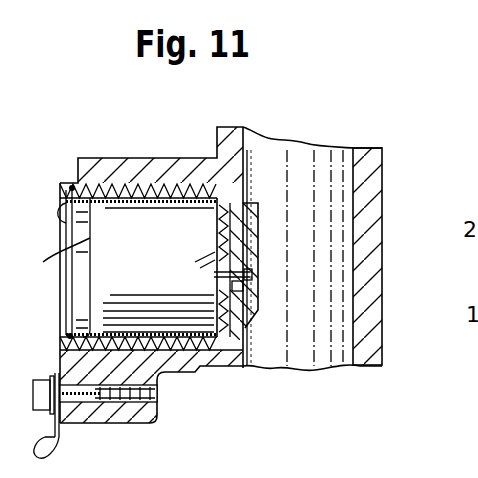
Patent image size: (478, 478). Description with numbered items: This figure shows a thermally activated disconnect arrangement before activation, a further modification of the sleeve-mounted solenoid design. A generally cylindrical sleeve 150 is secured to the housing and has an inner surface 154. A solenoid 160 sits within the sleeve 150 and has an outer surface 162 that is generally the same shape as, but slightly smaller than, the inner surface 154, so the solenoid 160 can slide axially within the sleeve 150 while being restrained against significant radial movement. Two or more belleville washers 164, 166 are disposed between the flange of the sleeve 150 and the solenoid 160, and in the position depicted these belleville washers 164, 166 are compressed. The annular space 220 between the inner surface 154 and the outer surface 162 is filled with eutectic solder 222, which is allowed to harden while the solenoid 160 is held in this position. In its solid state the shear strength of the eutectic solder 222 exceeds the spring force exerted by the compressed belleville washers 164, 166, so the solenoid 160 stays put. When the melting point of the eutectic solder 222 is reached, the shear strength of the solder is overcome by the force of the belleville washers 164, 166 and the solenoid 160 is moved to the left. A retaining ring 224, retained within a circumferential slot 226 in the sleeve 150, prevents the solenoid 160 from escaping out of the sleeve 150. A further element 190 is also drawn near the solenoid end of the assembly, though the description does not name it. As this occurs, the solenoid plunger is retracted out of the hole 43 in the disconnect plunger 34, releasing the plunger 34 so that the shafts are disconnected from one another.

The disconnect plunger 34 is at (382, 231).
The aperture 43 is at (247, 274).
The sleeve 150 is at (90, 184).
The inner surface 154 is at (180, 172).
The solenoid 160 is at (203, 345).
The outer surface 162 is at (166, 277).
The belleville washer 164 is at (238, 214).
The belleville washer 166 is at (257, 202).
The retainer 190 is at (254, 280).
The annular space 220 is at (130, 198).
The eutectic solder 222 is at (180, 340).
The retaining ring 224 is at (80, 232).
The circumferential slot 226 is at (72, 188).